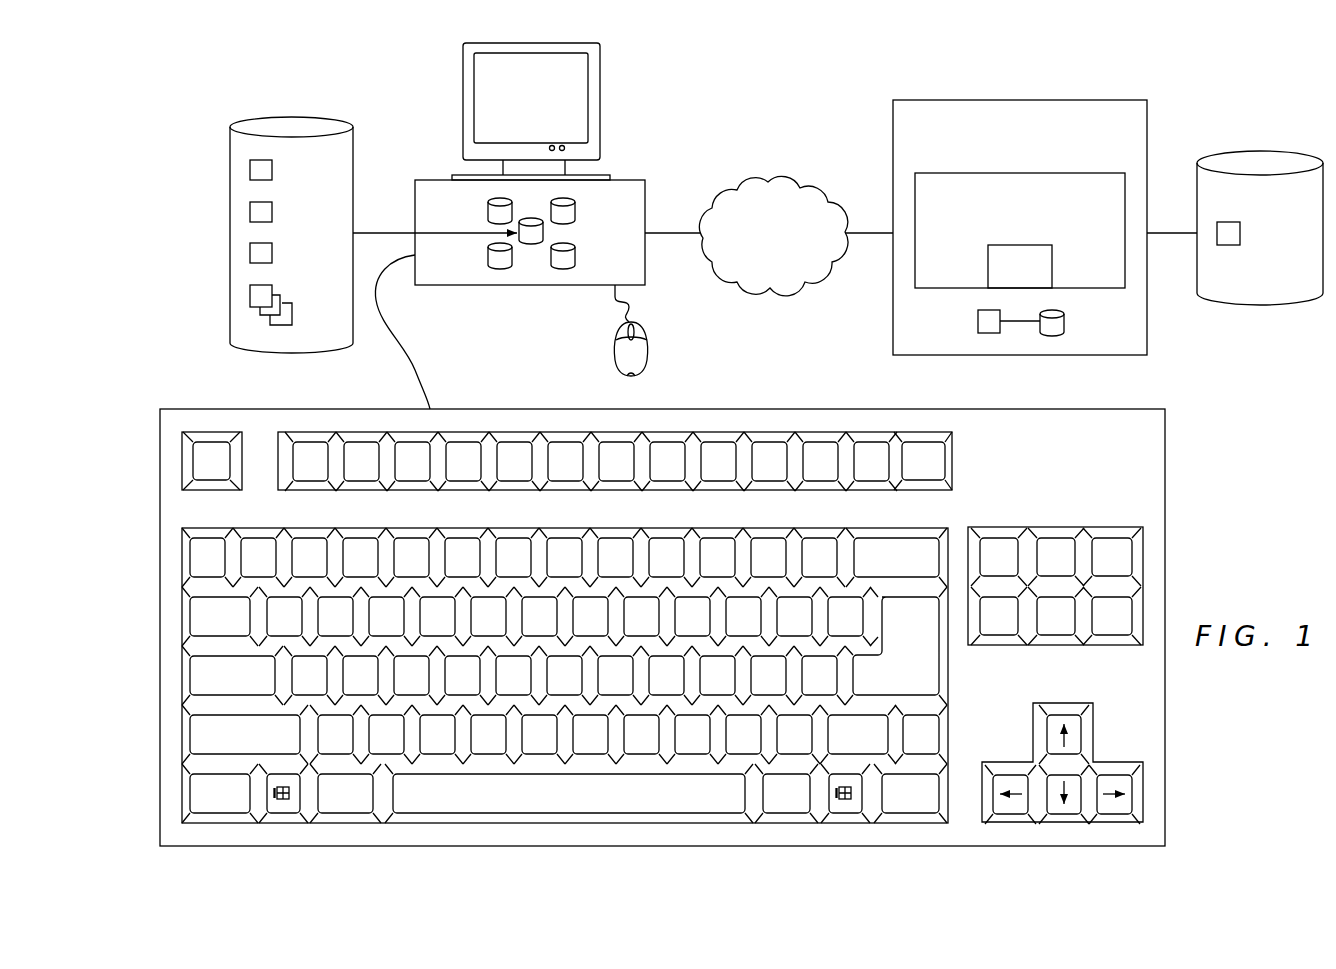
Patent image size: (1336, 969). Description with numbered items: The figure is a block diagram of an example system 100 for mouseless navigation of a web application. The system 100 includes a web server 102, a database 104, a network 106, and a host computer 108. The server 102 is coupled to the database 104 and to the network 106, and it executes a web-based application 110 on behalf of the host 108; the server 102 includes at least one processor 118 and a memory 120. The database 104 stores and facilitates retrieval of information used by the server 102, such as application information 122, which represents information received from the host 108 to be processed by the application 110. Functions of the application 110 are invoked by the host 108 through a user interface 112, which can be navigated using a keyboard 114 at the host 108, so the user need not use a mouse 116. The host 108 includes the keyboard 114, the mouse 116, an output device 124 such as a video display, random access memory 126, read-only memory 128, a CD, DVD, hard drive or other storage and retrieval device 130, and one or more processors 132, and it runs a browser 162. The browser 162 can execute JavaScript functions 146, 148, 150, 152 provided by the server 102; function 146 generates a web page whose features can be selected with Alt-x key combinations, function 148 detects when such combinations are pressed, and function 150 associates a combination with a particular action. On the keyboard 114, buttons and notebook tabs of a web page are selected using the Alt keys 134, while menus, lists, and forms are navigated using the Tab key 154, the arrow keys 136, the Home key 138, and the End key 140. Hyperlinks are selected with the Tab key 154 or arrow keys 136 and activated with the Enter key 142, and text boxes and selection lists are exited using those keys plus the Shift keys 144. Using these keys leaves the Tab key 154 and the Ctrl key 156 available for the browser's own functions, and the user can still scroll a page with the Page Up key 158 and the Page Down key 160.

The system 100 is at (200, 200).
The web server 102 is at (1020, 197).
The database 104 is at (1260, 202).
The network 106 is at (770, 180).
The host computer 108 is at (562, 164).
The web-based application 110 is at (1020, 197).
The user interface 112 is at (1052, 265).
The keyboard 114 is at (675, 648).
The mouse 116 is at (647, 340).
The processor 118 is at (978, 320).
The memory 120 is at (1062, 318).
The application information 122 is at (1240, 233).
The output device 124 is at (463, 100).
The random access memory (RAM) 126 is at (488, 258).
The read-only memory (ROM) 128 is at (575, 210).
The storage and retrieval device 130 is at (575, 258).
The processor 132 is at (488, 212).
The Alt keys 134 is at (348, 813).
The arrow keys 136 is at (1063, 824).
The Home key 138 is at (1057, 538).
The End key 140 is at (1057, 636).
The Enter key 142 is at (940, 658).
The Shift keys 144 is at (190, 735).
The JavaScript function 146 is at (272, 170).
The JavaScript function 148 is at (272, 212).
The JavaScript function 150 is at (272, 253).
The JavaScript function 152 is at (285, 300).
The Tab key 154 is at (190, 614).
The Ctrl key 156 is at (190, 795).
The Page Up key 158 is at (1112, 538).
The Page Down key 160 is at (1112, 636).
The browser 162 is at (291, 207).